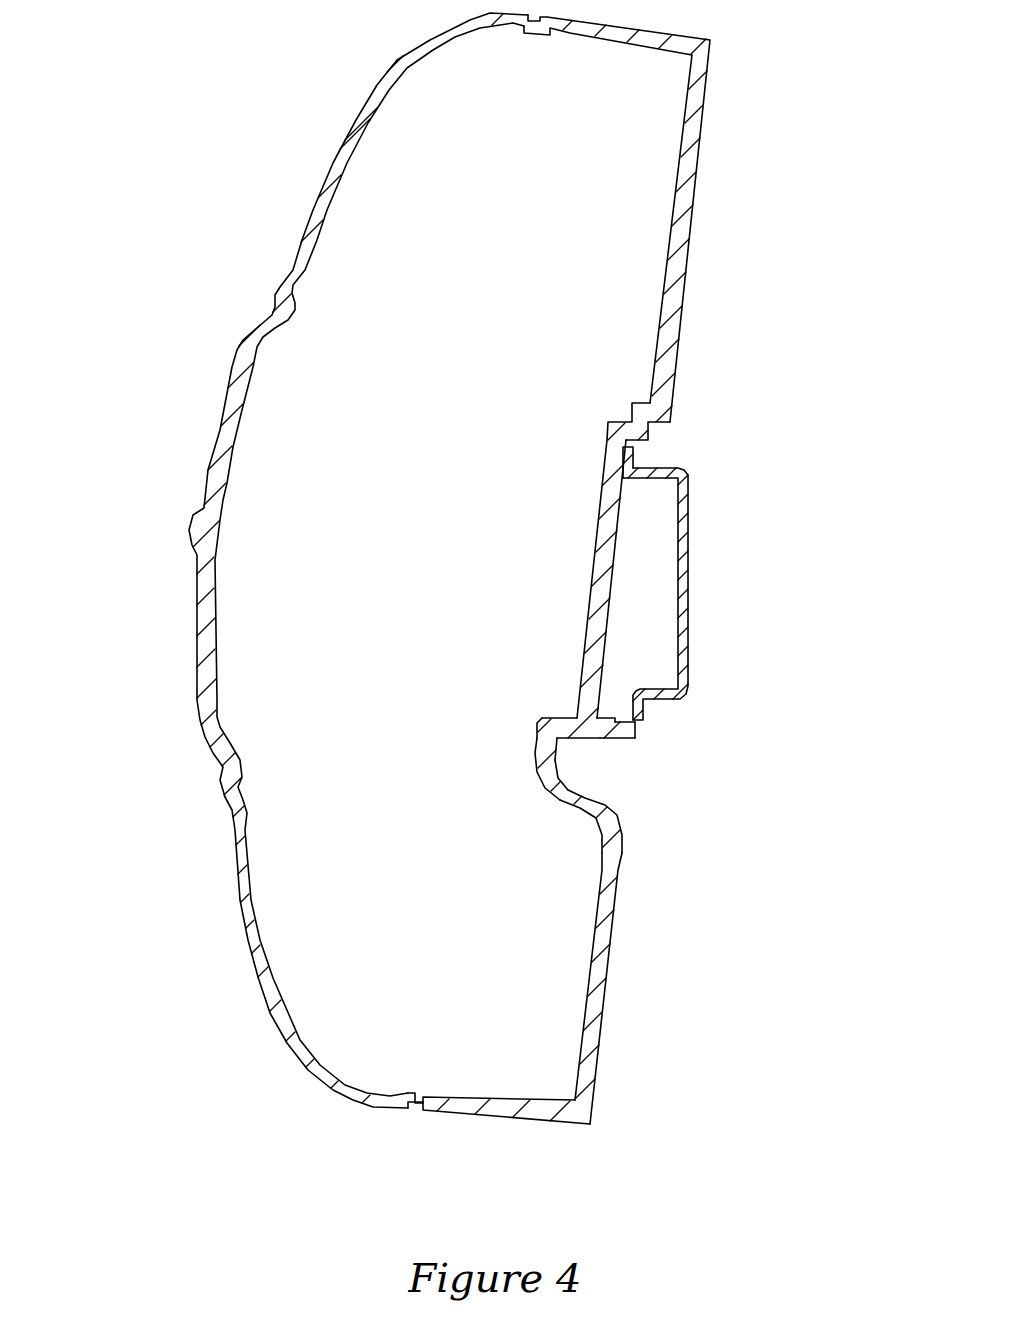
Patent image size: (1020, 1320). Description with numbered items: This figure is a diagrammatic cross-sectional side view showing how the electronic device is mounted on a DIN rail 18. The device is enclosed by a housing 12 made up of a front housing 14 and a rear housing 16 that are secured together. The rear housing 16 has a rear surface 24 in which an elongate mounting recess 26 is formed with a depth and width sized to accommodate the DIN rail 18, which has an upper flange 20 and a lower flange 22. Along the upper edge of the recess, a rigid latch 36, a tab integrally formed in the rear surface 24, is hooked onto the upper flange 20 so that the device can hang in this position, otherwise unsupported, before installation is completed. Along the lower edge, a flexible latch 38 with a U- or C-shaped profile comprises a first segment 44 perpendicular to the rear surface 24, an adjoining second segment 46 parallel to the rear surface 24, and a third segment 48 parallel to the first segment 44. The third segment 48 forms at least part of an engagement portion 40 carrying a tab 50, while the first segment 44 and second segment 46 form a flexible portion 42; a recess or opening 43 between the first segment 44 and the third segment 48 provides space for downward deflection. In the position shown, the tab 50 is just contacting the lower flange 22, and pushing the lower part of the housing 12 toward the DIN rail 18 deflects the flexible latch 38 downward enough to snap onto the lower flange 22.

The housing 12 is at (200, 102).
The front housing 14 is at (207, 681).
The rear housing 16 is at (505, 1108).
The DIN rail 18 is at (700, 566).
The upper flange 20 is at (608, 445).
The lower flange 22 is at (620, 721).
The rear surface 24 is at (608, 967).
The mounting recess 26 is at (598, 570).
The rigid latch 36 is at (640, 450).
The flexible latch 38 is at (650, 729).
The engagement portion 40 is at (575, 702).
The flexible portion 42 is at (535, 799).
The recess or opening 43 is at (583, 770).
The first segment 44 is at (572, 810).
The second segment 46 is at (537, 734).
The third segment 48 is at (594, 739).
The tab 50 is at (610, 718).